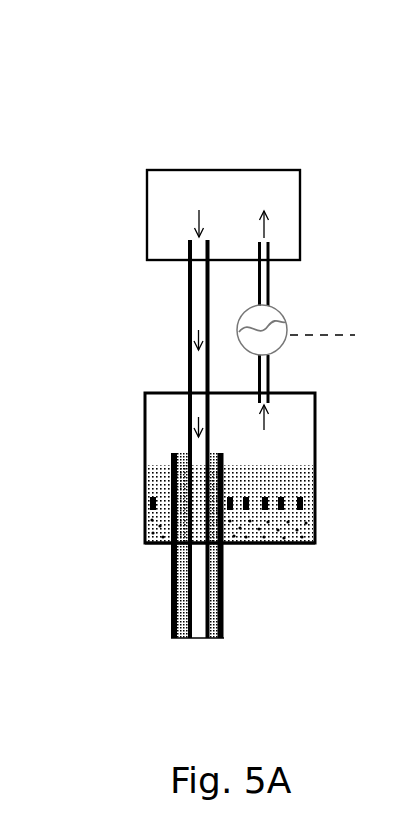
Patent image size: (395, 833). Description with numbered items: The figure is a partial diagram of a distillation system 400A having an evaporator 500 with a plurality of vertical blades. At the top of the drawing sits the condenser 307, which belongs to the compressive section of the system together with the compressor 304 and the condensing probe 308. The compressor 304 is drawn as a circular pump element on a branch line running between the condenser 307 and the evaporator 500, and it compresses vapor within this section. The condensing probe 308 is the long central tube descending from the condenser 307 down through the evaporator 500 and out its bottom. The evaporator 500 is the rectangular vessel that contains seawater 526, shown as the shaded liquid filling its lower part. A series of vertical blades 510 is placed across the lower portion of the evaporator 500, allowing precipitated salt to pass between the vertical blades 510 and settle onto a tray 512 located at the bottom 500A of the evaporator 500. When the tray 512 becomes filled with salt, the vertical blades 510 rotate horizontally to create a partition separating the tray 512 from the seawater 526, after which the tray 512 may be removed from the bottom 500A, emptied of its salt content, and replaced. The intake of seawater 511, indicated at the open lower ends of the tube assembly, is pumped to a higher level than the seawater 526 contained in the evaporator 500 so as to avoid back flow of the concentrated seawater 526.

The distillation system 400A is at (128, 100).
The condenser 307 is at (223, 215).
The condensing probe 308 is at (199, 595).
The compressor 304 is at (296, 336).
The evaporator 500 is at (143, 395).
The bottom of evaporator 500A is at (143, 542).
The tray 512 is at (267, 547).
The vertical blades 510 is at (306, 497).
The seawater 526 is at (157, 473).
The intake of seawater 511 is at (180, 640).